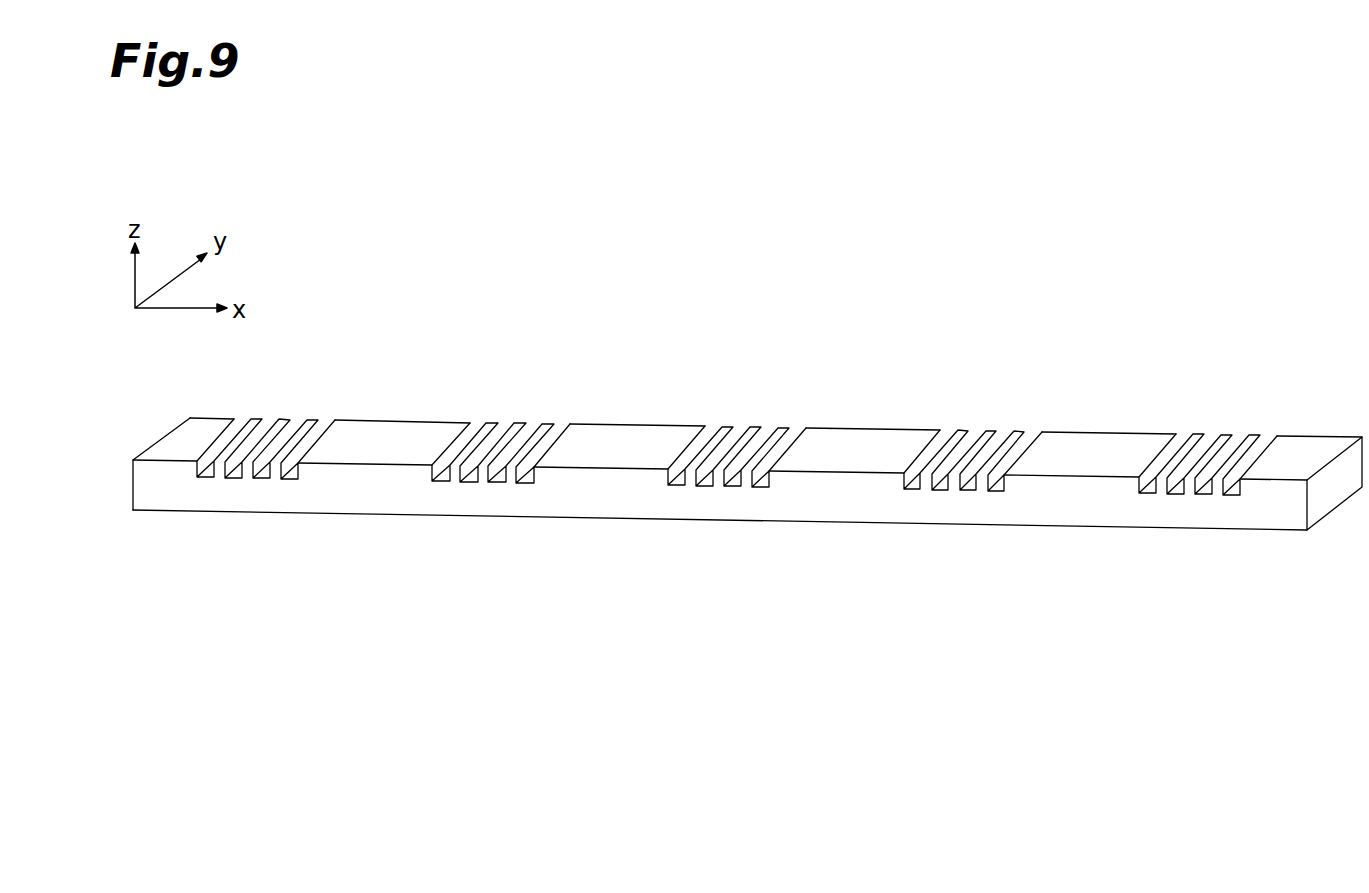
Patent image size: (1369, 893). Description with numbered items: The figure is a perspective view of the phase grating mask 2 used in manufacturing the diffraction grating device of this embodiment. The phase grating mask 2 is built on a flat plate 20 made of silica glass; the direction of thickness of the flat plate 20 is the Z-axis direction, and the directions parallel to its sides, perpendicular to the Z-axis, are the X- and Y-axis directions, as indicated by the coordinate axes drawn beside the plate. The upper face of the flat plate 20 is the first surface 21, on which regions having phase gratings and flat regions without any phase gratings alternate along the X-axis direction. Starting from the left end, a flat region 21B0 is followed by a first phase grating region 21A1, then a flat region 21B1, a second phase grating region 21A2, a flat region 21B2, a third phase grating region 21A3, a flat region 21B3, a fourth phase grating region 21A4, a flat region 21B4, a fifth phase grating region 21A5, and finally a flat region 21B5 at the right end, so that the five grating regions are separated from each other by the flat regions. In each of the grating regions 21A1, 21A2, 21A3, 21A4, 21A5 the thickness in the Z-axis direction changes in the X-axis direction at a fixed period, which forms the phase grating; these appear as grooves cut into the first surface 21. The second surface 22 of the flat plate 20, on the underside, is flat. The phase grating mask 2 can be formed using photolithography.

The phase grating mask 2 is at (875, 297).
The flat plate 20 is at (150, 483).
The first surface 21 is at (162, 450).
The second surface 22 is at (173, 512).
The flat region 21B0 is at (253, 396).
The region having phase grating 21A1 is at (350, 397).
The flat region 21B1 is at (483, 399).
The region having phase grating 21A2 is at (580, 400).
The flat region 21B2 is at (718, 402).
The region having phase grating 21A3 is at (815, 404).
The flat region 21B3 is at (950, 405).
The region having phase grating 21A4 is at (1050, 407).
The flat region 21B4 is at (1188, 409).
The region having phase grating 21A5 is at (1285, 410).
The flat region 21B5 is at (1365, 412).